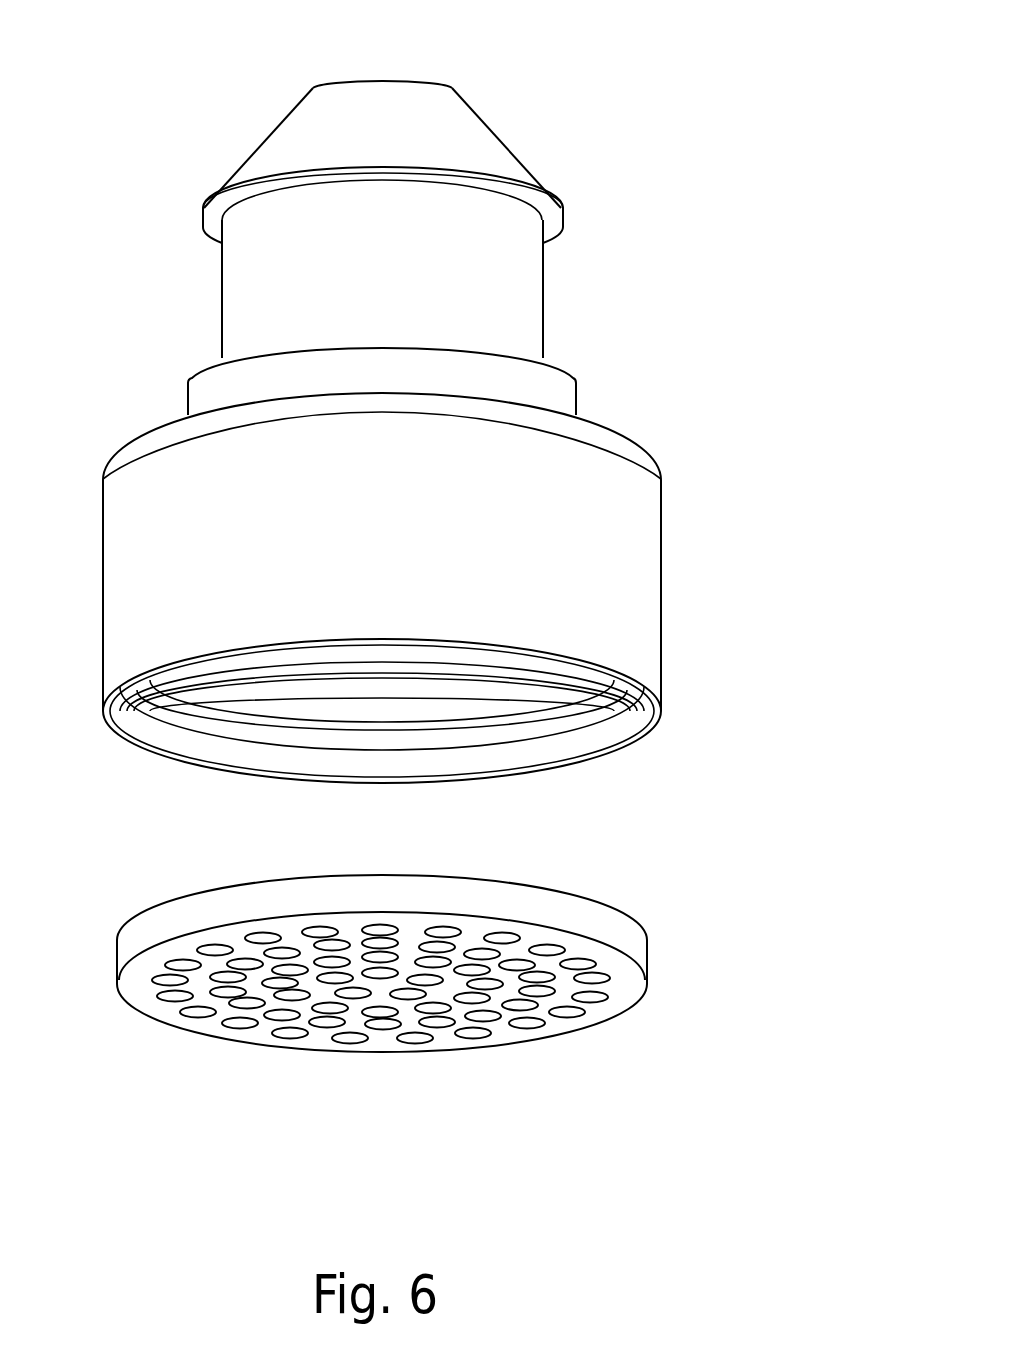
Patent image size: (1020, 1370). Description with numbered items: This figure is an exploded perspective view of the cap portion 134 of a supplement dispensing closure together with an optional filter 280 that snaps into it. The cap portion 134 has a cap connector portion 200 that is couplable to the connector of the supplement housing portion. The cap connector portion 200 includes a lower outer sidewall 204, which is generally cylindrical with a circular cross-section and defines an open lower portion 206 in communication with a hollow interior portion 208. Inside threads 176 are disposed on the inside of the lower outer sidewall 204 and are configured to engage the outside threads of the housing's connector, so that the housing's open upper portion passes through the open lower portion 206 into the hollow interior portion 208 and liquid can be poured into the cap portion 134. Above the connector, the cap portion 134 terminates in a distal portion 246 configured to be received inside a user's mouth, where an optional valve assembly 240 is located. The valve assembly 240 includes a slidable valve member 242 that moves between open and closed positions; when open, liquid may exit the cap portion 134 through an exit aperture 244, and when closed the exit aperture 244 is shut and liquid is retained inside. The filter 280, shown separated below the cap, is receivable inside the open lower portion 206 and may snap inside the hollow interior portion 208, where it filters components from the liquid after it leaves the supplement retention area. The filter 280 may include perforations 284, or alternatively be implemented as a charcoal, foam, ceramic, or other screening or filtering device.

The cap portion 134 is at (627, 58).
The exit aperture 244 is at (388, 78).
The slidable valve member 242 is at (503, 143).
The distal portion 246 is at (253, 150).
The valve assembly 240 is at (543, 310).
The cap connector portion 200 is at (661, 522).
The lower outer sidewall 204 is at (661, 640).
The open lower portion 206 is at (182, 733).
The inside threads 176 is at (240, 727).
The hollow interior portion 208 is at (422, 685).
The filter 280 is at (697, 942).
The perforations 284 is at (381, 1026).